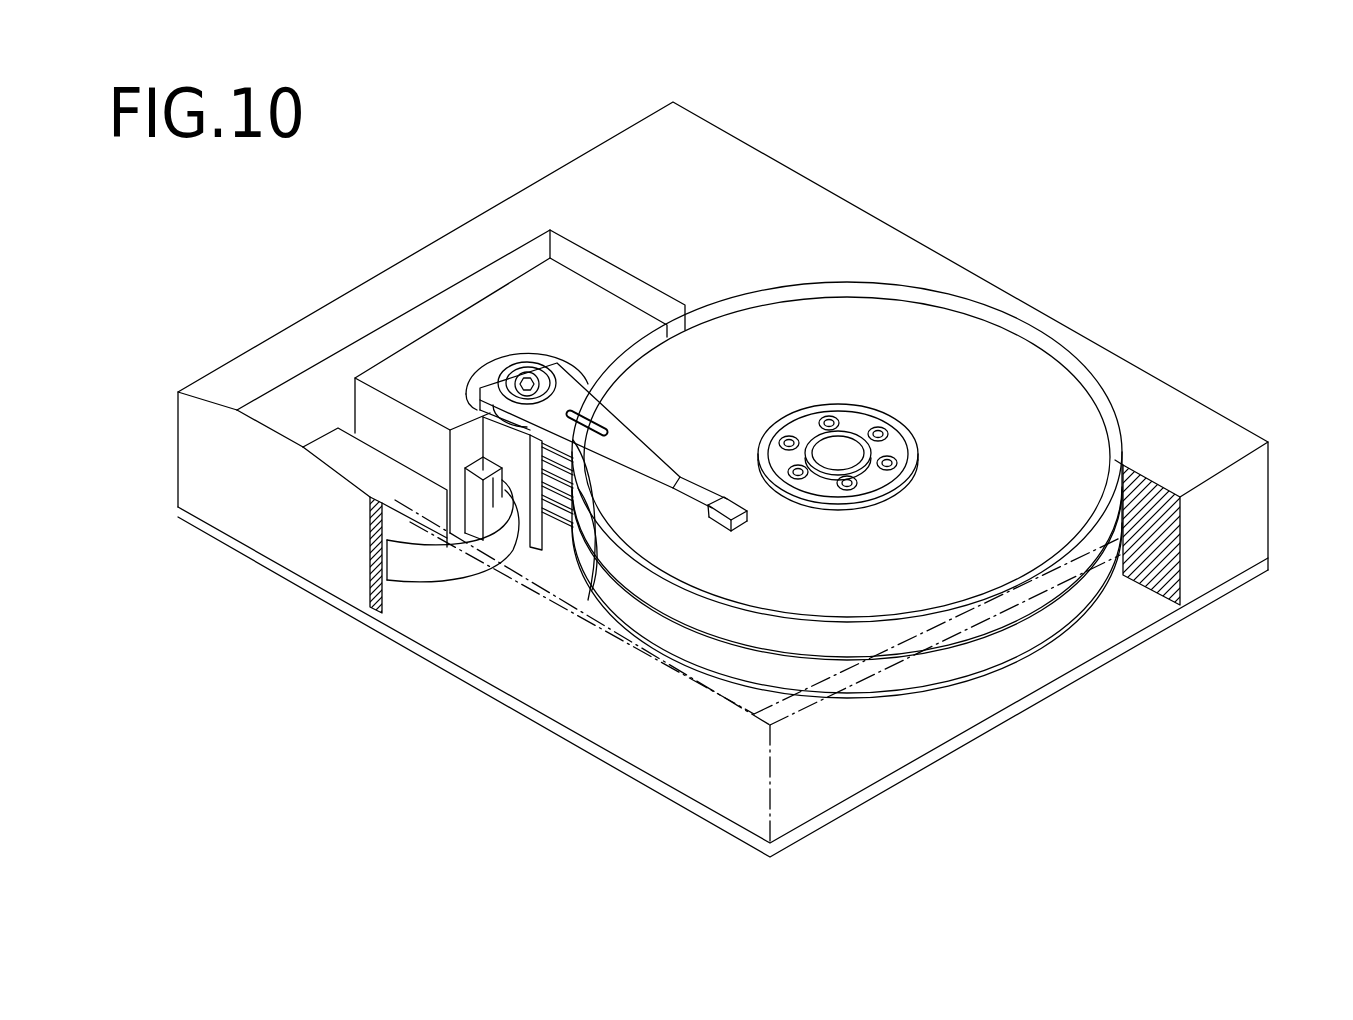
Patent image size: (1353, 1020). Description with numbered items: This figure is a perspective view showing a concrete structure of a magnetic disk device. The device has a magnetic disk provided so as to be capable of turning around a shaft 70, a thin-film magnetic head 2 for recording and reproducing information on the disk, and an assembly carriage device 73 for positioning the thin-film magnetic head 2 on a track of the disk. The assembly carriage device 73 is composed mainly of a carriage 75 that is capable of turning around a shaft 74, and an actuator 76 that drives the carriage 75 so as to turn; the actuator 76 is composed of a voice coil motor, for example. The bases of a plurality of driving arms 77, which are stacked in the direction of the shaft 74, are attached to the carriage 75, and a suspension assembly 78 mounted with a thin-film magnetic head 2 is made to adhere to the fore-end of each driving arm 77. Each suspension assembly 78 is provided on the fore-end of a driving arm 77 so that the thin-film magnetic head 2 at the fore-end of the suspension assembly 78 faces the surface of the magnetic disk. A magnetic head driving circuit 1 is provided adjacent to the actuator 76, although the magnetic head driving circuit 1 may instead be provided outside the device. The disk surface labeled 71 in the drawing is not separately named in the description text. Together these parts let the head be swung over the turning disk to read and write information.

The magnetic head driving circuit 1 is at (346, 452).
The thin-film magnetic head 2 is at (750, 522).
The shaft 70 is at (841, 450).
The magnetic disk 71 is at (1004, 438).
The assembly carriage device 73 is at (422, 208).
The shaft 74 is at (540, 378).
The carriage 75 is at (493, 507).
The actuator 76 is at (427, 390).
The driving arm 77 is at (629, 445).
The suspension assembly 78 is at (704, 497).